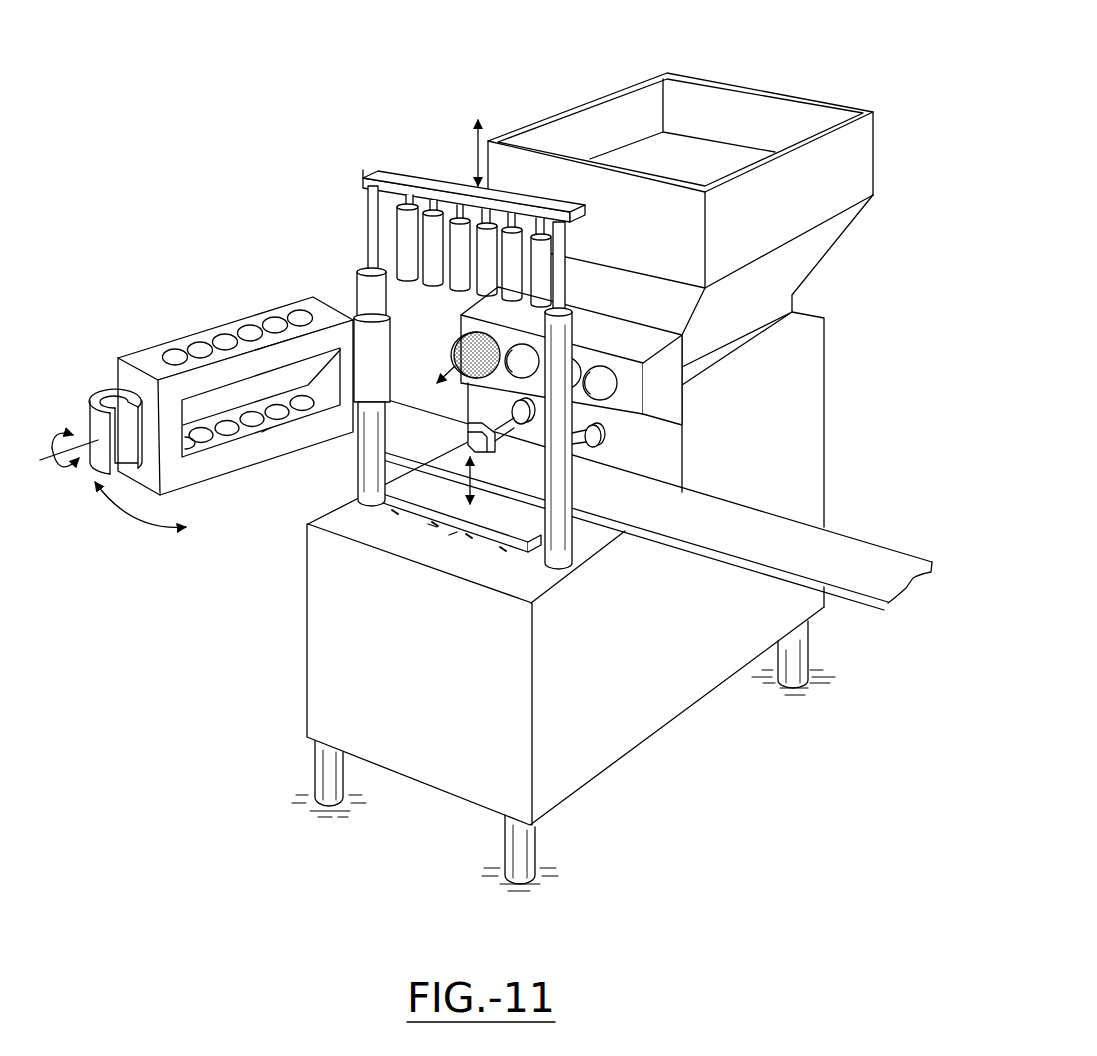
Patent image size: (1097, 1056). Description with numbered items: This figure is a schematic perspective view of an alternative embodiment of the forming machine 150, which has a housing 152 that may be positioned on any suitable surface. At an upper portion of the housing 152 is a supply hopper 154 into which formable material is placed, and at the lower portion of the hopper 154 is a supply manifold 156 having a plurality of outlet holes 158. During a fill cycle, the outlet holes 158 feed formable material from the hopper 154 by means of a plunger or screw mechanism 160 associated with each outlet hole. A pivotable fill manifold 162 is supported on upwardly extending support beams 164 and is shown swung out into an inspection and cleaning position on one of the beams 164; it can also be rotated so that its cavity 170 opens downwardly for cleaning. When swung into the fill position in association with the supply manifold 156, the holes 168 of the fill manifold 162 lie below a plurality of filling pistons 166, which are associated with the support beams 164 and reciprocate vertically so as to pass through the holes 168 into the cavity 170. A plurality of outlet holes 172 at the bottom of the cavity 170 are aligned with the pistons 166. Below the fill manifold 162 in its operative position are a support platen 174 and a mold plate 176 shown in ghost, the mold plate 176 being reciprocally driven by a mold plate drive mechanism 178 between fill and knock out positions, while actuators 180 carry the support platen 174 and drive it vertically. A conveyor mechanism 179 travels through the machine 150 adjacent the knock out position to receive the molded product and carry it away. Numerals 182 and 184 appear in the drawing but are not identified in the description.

The forming machine 150 is at (563, 90).
The housing 152 is at (828, 430).
The supply hopper 154 is at (770, 95).
The supply manifold 156 is at (670, 380).
The outlet holes 158 is at (607, 398).
The plunger or screw mechanism 160 is at (458, 346).
The fill manifold 162 is at (196, 393).
The support beams 164 is at (440, 403).
The filling pistons 166 is at (399, 224).
The holes 168 is at (274, 322).
The cavity 170 is at (267, 430).
The outlet holes 172 is at (246, 425).
The support platen 174 is at (507, 556).
The mold plate 176 is at (455, 535).
The mold plate drive mechanism 178 is at (468, 436).
The conveyor mechanism 179 is at (862, 549).
The actuators 180 is at (436, 524).
The cross bar 182 is at (397, 168).
The rod 184 is at (368, 248).